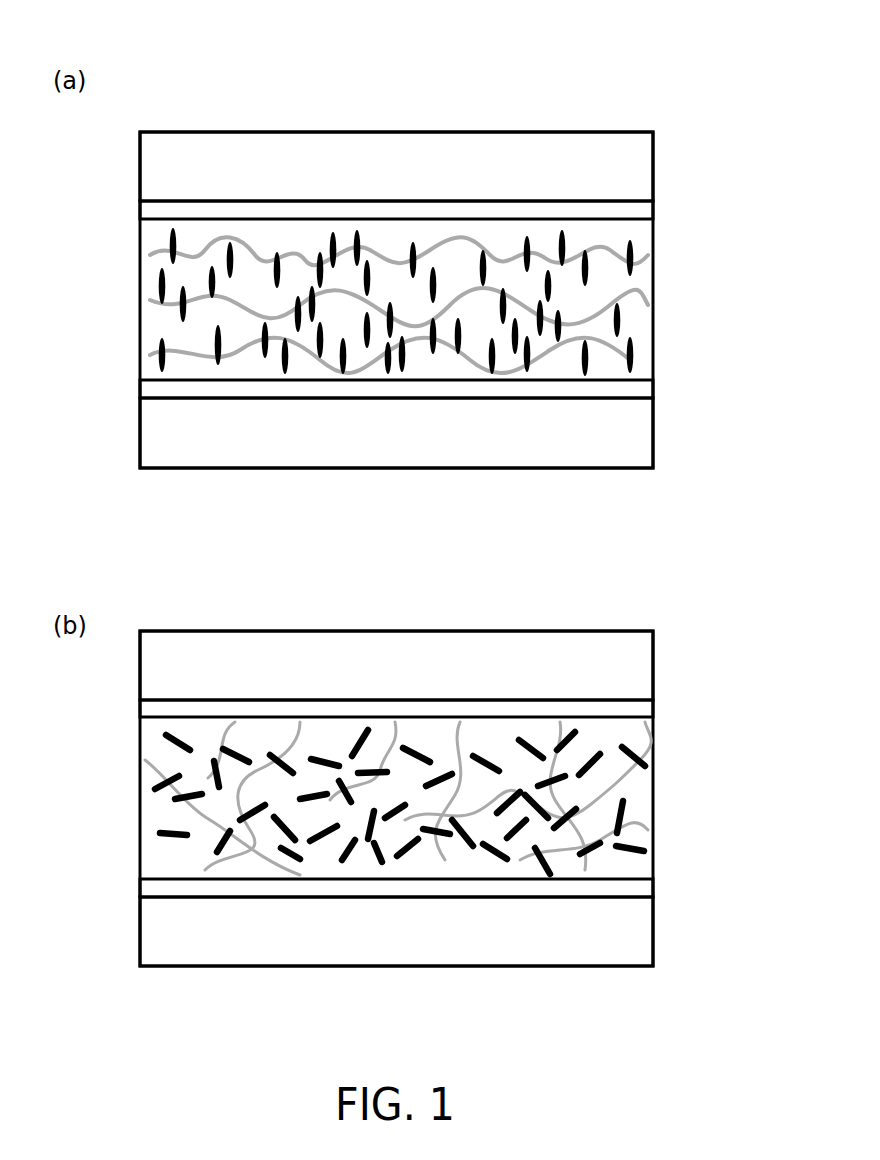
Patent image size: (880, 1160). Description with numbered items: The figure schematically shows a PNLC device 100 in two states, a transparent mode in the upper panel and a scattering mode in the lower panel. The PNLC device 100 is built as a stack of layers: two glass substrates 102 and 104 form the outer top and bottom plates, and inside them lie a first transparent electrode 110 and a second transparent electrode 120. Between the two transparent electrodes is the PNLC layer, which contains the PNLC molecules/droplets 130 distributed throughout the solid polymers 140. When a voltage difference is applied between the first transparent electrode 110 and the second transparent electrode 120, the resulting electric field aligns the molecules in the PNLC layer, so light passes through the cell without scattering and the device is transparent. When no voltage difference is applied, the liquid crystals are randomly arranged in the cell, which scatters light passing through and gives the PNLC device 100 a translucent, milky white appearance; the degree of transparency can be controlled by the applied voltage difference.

The PNLC device 100 is at (418, 31).
The glass substrate 102 is at (220, 468).
The glass substrate 104 is at (228, 132).
The first transparent electrode 110 is at (653, 392).
The second transparent electrode 120 is at (653, 210).
The PNLC molecules/droplets 130 is at (633, 260).
The solid polymers 140 is at (152, 255).